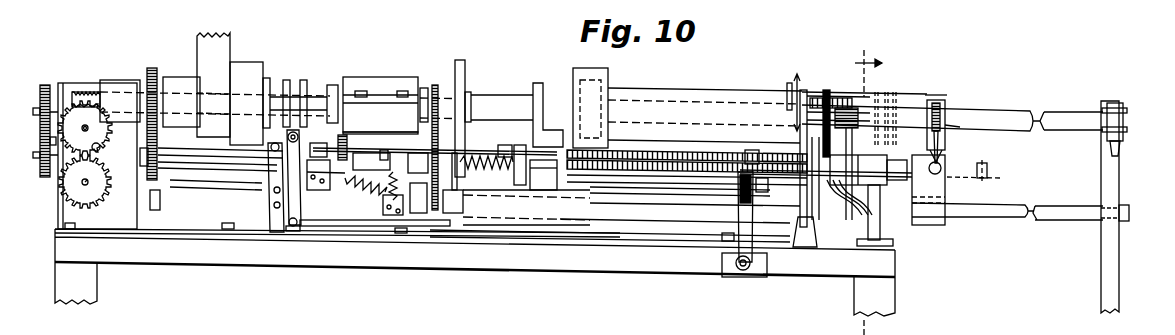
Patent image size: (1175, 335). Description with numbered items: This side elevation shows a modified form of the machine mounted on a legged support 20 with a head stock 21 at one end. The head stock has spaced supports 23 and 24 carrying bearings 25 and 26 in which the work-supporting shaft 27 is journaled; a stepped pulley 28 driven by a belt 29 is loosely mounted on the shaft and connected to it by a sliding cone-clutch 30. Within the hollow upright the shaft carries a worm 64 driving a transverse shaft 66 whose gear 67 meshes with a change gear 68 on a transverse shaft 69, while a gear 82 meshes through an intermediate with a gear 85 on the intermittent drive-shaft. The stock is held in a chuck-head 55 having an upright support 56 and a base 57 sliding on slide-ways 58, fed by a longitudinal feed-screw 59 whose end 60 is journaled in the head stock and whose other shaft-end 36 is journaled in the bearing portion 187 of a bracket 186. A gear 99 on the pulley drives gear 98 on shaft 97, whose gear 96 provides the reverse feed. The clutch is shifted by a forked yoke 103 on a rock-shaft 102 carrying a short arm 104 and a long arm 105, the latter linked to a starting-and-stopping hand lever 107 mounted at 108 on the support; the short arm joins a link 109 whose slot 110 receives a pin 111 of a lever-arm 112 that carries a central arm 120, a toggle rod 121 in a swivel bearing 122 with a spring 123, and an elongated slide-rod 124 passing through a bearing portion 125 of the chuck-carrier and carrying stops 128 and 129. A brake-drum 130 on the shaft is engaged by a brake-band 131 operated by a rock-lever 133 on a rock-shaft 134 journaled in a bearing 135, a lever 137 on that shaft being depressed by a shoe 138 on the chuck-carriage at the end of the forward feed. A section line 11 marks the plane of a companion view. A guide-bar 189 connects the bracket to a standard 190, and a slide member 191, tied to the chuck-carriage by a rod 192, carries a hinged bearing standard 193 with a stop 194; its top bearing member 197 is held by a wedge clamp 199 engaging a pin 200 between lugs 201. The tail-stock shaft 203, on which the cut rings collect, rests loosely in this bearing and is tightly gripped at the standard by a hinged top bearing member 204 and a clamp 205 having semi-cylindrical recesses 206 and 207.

The legged support 20 is at (395, 268).
The head stock 21 is at (198, 232).
The gear 82 is at (45, 85).
The gear 85 is at (50, 141).
The worm 64 is at (84, 91).
The transversely-disposed shaft 66 is at (90, 128).
The gear 67 is at (100, 148).
The support 23 is at (102, 165).
The transverse shaft 69 is at (90, 182).
The gear 68 is at (90, 203).
The bearing 25 is at (122, 95).
The gear 99 is at (152, 70).
The belt 29 is at (222, 45).
The stepped pulley 28 is at (250, 75).
The forked yoke 103 is at (266, 100).
The sliding cone-clutch 30 is at (287, 83).
The short arm 104 is at (333, 85).
The bearing 26 is at (380, 79).
The support 24 is at (406, 140).
The central arm 120 is at (358, 138).
The brake-band 131 is at (461, 60).
The brake-drum 130 is at (471, 93).
The work-supporting shaft 27 is at (503, 108).
The upright support 56 is at (548, 130).
The chuck-head 55 is at (608, 72).
The gear 96 is at (347, 148).
The bearing 135 is at (388, 157).
The spring 123 is at (372, 176).
The shaft end 60 is at (421, 162).
The shaft 97 is at (190, 156).
The gear 98 is at (155, 200).
The link 109 is at (270, 172).
The pin 111 is at (274, 205).
The rock-shaft 102 is at (303, 136).
The long arm 105 is at (293, 228).
The slot 110 is at (275, 230).
The lever-arm 112 is at (332, 182).
The toggle rod 121 is at (370, 191).
The swivel bearing 122 is at (392, 214).
The slide-rod 124 is at (478, 156).
The stop 128 is at (515, 149).
The bearing portion 125 is at (546, 175).
The rock-lever 133 is at (457, 182).
The rock-shaft 134 is at (498, 182).
The base 57 is at (530, 215).
The slide-ways 58 is at (618, 205).
The longitudinal feed-screw 59 is at (660, 160).
The shoe 138 is at (610, 160).
The stop 129 is at (742, 156).
The starting-and-stopping hand lever 107 is at (728, 250).
The hand lever mounting 108 is at (743, 271).
The lever 137 is at (762, 194).
The shaft end 36 is at (815, 228).
The rod 192 is at (848, 157).
The bearing portion 187 is at (888, 184).
The bracket 186 is at (882, 232).
The section line 11 is at (847, 192).
The pin 200 is at (930, 108).
The top bearing member 197 is at (938, 97).
The wedge clamp 199 is at (948, 107).
The lugs 201 is at (950, 131).
The bearing standard 193 is at (945, 154).
The slide member 191 is at (925, 212).
The stop 194 is at (988, 168).
The tail-stock shaft 203 is at (1012, 118).
The guide-bar 189 is at (1008, 218).
The standard 190 is at (1107, 251).
The top bearing member 204 is at (1112, 105).
The bearing recess 206 is at (1126, 108).
The bearing recess 207 is at (1127, 125).
The clamp 205 is at (1120, 152).